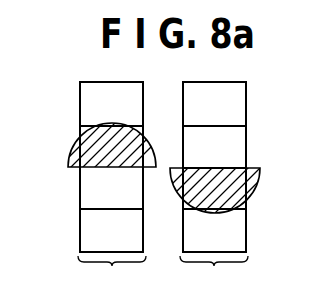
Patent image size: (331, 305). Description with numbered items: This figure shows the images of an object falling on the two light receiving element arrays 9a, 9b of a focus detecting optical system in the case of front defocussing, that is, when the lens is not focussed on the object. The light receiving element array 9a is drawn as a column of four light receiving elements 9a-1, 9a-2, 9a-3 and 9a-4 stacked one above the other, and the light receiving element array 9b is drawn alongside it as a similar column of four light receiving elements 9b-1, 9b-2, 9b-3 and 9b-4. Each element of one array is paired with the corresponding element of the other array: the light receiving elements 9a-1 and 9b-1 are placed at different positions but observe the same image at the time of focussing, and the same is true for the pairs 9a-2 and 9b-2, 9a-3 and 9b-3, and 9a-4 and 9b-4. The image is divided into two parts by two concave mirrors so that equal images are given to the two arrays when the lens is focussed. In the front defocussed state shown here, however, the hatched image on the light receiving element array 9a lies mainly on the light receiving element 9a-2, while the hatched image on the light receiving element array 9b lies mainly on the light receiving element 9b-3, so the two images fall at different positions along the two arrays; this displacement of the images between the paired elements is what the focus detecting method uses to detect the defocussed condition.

The light receiving element array 9a is at (112, 189).
The light receiving element 9a-1 is at (88, 100).
The light receiving element 9a-2 is at (92, 144).
The light receiving element 9a-3 is at (93, 190).
The light receiving element 9a-4 is at (93, 232).
The light receiving element array 9b is at (214, 189).
The light receiving element 9b-1 is at (235, 102).
The light receiving element 9b-2 is at (237, 148).
The light receiving element 9b-3 is at (235, 196).
The light receiving element 9b-4 is at (235, 237).